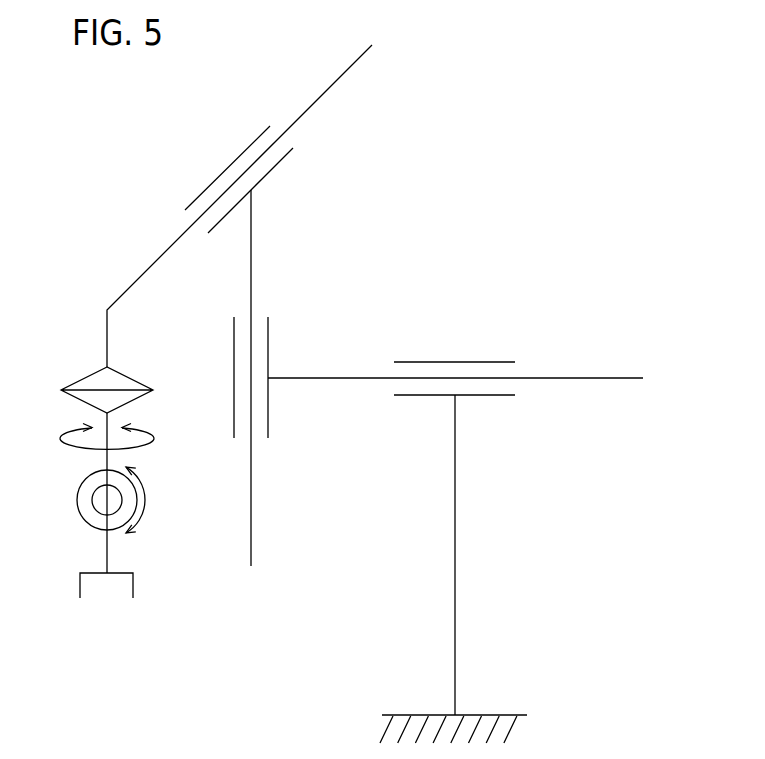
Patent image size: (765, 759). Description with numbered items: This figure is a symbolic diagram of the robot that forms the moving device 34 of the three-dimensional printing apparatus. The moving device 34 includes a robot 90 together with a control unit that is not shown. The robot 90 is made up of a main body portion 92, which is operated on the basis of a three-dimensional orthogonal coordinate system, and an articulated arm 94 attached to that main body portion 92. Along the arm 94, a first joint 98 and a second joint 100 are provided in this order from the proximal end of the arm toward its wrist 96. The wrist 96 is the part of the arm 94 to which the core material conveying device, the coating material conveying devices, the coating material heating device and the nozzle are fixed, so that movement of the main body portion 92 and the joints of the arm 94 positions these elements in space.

The moving device 34 is at (580, 52).
The robot 90 is at (90, 675).
The main body portion 92 is at (236, 562).
The articulated arm 94 is at (115, 600).
The wrist 96 is at (80, 588).
The first joint 98 is at (130, 377).
The second joint 100 is at (82, 483).